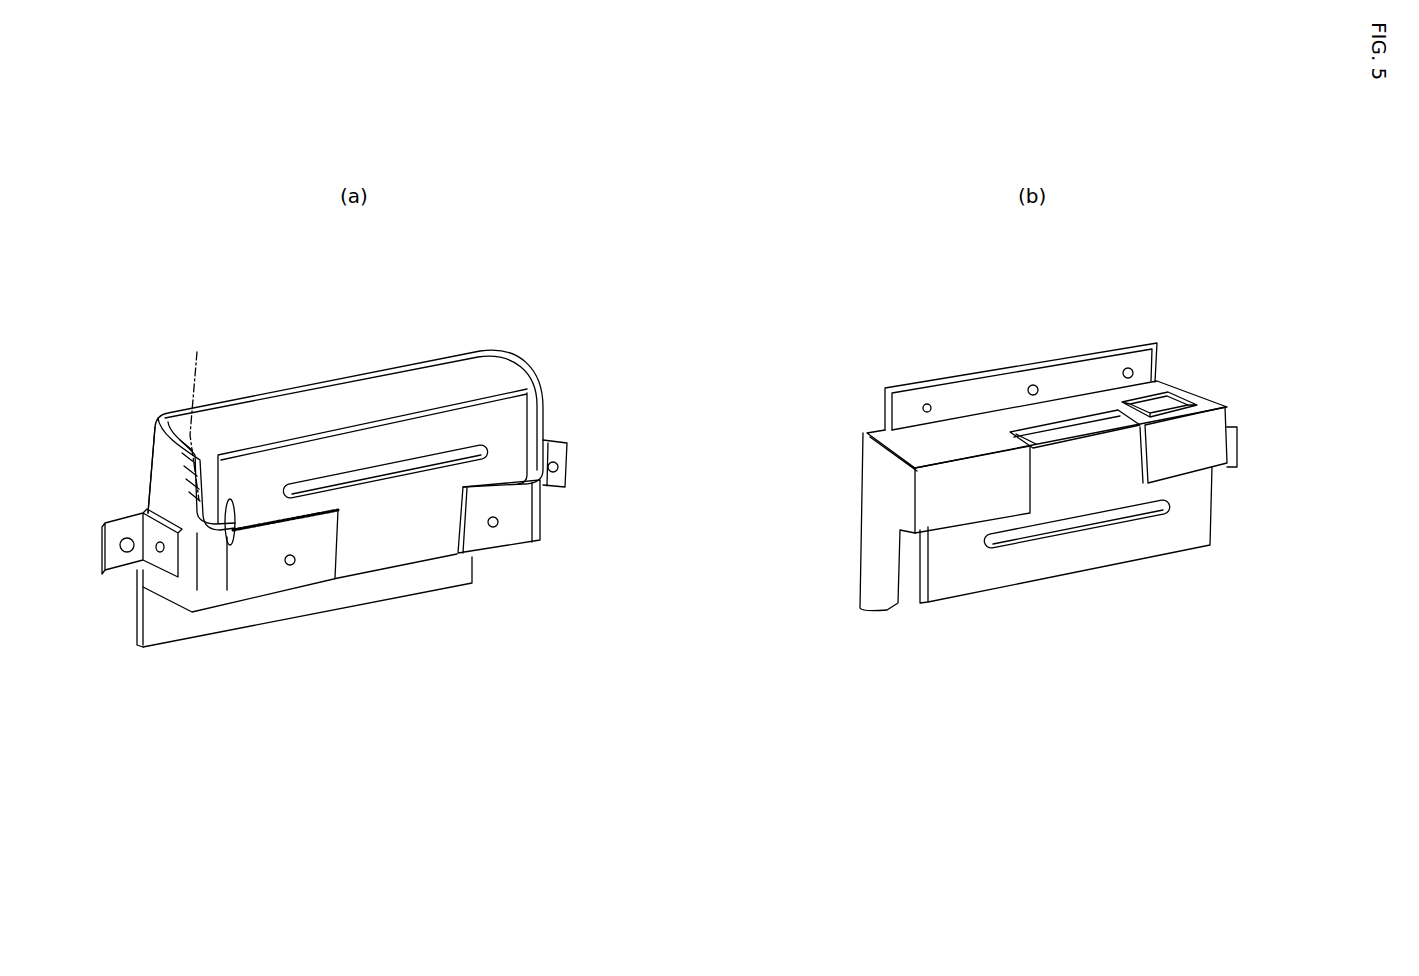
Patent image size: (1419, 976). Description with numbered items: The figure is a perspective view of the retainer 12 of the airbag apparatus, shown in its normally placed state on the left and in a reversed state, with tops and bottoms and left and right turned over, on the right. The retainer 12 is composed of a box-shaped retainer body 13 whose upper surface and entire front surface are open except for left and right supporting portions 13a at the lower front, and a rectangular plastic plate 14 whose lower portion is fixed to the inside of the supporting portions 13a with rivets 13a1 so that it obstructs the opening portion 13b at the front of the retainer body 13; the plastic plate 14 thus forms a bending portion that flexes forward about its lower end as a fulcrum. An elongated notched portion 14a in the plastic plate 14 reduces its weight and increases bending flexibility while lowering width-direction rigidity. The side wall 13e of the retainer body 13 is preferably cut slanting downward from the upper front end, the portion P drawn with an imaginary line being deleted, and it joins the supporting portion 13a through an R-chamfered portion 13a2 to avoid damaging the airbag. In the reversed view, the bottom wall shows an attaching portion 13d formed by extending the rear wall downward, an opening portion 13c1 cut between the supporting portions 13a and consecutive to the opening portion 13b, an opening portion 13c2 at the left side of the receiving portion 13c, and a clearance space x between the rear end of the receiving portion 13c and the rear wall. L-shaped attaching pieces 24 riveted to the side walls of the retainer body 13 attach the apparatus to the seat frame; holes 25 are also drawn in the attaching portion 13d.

The retainer 12 is at (282, 365).
The retainer body 13 is at (352, 372).
The supporting portion 13a is at (260, 577).
The rivet 13a1 is at (293, 565).
The R-chamfered portion 13a2 is at (230, 543).
The opening portion 13b is at (335, 558).
The receiving portion 13c is at (913, 445).
The opening portion 13c1 is at (1047, 432).
The opening portion 13c2 is at (1173, 410).
The attaching portion 13d is at (167, 630).
The side wall 13e is at (168, 478).
The plastic plate 14 is at (472, 398).
The notched portion 14a is at (348, 490).
The attaching piece 24 is at (120, 560).
The hole 25 is at (927, 403).
The portion indicated by imaginary line P is at (192, 415).
The clearance space x is at (1143, 383).